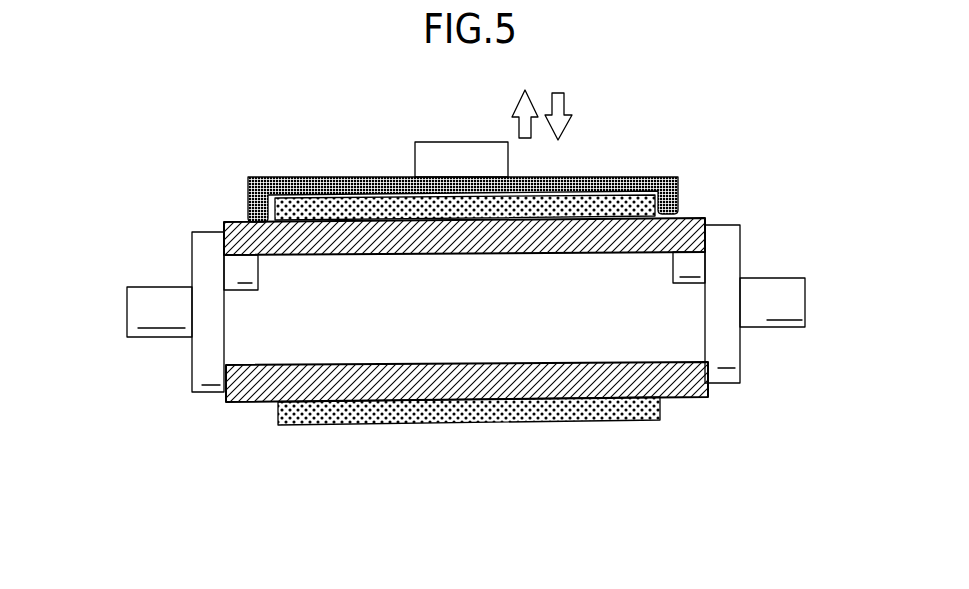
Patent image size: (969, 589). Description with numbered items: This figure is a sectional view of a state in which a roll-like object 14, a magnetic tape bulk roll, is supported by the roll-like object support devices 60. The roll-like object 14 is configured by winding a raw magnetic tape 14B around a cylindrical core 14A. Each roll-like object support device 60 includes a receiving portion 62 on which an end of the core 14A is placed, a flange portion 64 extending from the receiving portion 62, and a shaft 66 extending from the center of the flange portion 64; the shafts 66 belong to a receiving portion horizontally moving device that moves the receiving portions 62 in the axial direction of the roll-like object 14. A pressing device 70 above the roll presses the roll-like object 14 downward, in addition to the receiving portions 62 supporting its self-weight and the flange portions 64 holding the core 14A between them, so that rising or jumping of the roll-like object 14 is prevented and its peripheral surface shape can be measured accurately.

The roll-like object 14 is at (474, 378).
The cylindrical core 14A is at (258, 402).
The raw magnetic tape 14B is at (543, 410).
The roll-like object support device 60 is at (465, 253).
The receiving portion 62 is at (258, 280).
The flange portion 64 is at (207, 232).
The shaft 66 is at (133, 310).
The pressing device 70 is at (620, 180).